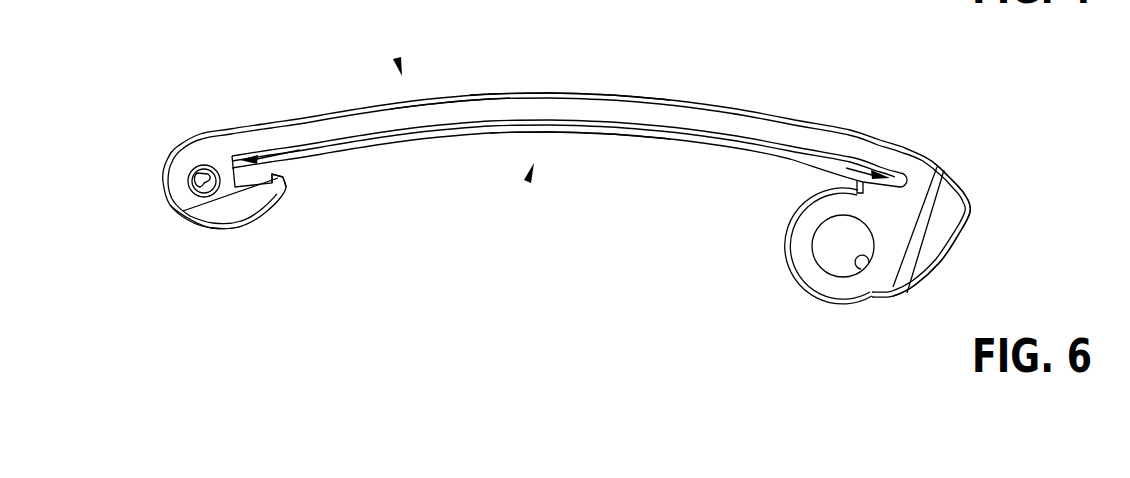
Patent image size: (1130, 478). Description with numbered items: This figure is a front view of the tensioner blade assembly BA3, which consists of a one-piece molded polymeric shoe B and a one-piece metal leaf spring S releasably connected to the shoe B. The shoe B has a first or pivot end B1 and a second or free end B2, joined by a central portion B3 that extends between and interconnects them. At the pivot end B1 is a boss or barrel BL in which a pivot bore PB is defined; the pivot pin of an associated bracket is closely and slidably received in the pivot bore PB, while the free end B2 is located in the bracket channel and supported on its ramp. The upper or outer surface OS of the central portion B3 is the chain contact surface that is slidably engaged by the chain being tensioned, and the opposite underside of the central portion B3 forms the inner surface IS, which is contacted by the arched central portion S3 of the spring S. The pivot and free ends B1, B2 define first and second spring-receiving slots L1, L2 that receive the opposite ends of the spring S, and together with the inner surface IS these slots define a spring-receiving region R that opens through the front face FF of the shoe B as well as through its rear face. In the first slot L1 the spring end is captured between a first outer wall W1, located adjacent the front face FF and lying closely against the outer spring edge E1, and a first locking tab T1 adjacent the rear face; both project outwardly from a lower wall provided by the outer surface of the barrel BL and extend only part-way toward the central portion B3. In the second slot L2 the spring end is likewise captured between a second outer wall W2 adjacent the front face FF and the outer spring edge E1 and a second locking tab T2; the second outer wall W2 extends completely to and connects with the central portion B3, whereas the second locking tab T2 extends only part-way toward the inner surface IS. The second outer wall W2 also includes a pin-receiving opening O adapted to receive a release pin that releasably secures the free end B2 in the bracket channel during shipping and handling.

The shoe B is at (306, 126).
The first or pivot end B1 is at (918, 182).
The second or free end B2 is at (189, 157).
The central portion B3 is at (558, 108).
The blade axis direction BA3 is at (397, 58).
The outer surface OS is at (654, 97).
The inner surface IS is at (790, 163).
The spring S is at (597, 134).
The arched central portion S3 is at (567, 133).
The front face FF is at (437, 113).
The outer lateral edge E1 is at (383, 137).
The spring-receiving region R is at (527, 181).
The first spring-receiving slot L1 is at (870, 166).
The second spring-receiving slot L2 is at (263, 148).
The first locking tab T1 is at (827, 176).
The second locking tab T2 is at (278, 173).
The first outer wall W1 is at (880, 200).
The second outer wall W2 is at (228, 178).
The pin-receiving opening O is at (188, 192).
The boss or barrel BL is at (787, 270).
The pivot bore PB is at (866, 268).